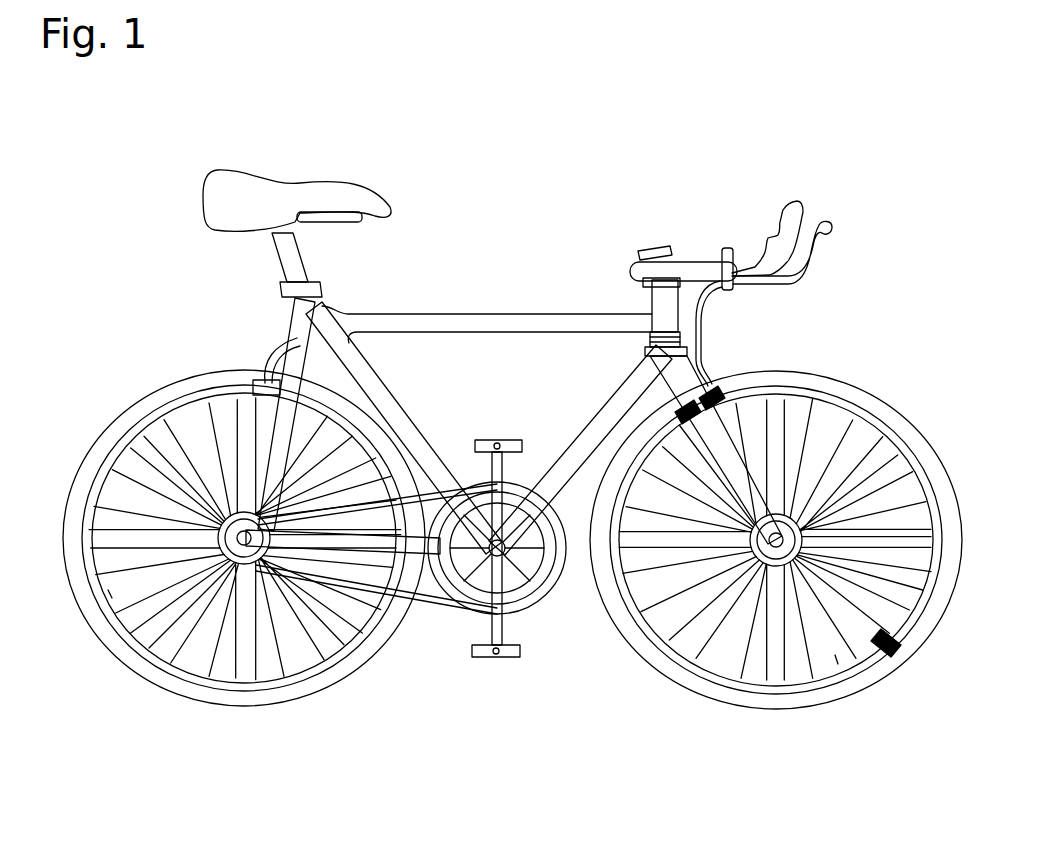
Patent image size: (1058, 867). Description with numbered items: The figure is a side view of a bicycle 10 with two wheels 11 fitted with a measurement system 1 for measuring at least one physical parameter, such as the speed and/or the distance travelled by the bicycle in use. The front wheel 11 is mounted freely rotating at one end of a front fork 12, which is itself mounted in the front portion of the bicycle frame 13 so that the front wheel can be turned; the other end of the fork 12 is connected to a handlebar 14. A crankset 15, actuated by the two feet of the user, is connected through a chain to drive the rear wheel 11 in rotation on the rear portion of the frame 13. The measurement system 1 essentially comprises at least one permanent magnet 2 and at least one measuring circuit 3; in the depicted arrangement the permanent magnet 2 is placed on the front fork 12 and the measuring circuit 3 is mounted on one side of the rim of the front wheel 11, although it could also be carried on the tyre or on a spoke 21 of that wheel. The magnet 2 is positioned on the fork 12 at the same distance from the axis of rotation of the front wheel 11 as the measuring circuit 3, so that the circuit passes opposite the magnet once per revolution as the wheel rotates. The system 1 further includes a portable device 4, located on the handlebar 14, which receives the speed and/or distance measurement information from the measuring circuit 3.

The measurement system 1 is at (868, 342).
The bicycle 10 is at (153, 265).
The wheel 11 is at (130, 416).
The front fork 12 is at (672, 390).
The bicycle frame 13 is at (446, 314).
The handlebar 14 is at (794, 208).
The crankset 15 is at (510, 440).
The permanent magnet 2 is at (712, 388).
The spoke 21 is at (672, 625).
The measuring circuit 3 is at (895, 652).
The portable device 4 is at (638, 254).